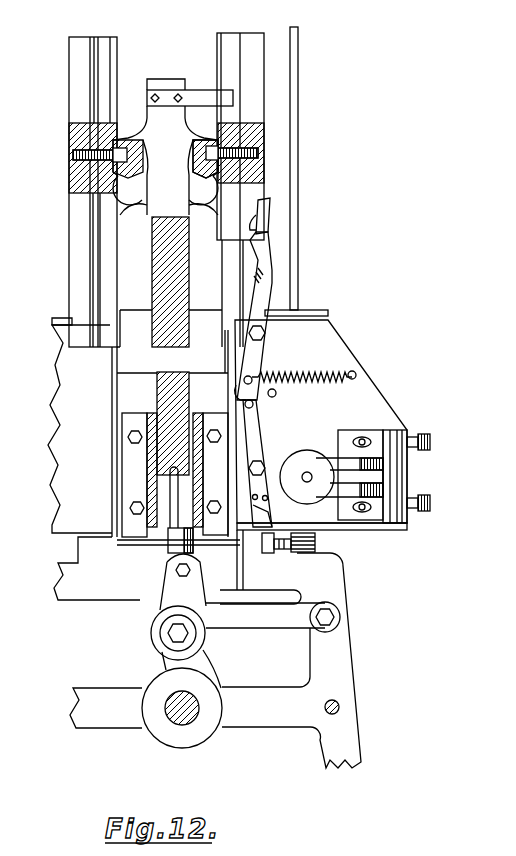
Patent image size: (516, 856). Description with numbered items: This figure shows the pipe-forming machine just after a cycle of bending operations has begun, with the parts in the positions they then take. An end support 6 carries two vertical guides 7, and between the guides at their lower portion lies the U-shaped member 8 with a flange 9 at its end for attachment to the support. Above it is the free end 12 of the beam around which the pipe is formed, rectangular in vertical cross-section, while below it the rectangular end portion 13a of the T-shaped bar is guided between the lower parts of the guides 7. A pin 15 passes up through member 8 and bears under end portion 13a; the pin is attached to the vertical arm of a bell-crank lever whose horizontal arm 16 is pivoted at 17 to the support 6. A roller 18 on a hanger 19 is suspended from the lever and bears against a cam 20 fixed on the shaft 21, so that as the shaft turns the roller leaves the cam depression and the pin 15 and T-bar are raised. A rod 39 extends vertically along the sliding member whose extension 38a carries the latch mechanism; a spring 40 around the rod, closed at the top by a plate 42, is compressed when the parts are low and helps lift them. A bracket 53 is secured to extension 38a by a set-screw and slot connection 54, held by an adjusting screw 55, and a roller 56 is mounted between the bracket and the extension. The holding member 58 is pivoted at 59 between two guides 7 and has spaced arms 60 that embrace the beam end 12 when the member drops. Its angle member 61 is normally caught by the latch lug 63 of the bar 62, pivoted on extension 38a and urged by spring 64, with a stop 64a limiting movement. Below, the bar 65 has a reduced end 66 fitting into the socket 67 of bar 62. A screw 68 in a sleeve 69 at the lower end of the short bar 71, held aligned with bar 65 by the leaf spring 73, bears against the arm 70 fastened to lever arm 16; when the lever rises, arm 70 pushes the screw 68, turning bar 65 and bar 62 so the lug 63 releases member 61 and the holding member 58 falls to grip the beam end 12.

The end support 6 is at (341, 658).
The guide 7 is at (104, 49).
The U-shaped member 8 is at (152, 481).
The flange 9 is at (132, 458).
The end of the beam 12 is at (176, 266).
The end portion of the T-bar 13a is at (184, 404).
The pin 15 is at (177, 504).
The horizontal arm of bell-crank lever 16 is at (224, 612).
The pivot 17 is at (334, 617).
The roller 18 is at (153, 634).
The hanger 19 is at (170, 603).
The cam 20 is at (198, 744).
The shaft 21 is at (177, 714).
The extension 38a is at (63, 370).
The rod 39 is at (298, 80).
The spring 40 is at (314, 548).
The plate 42 is at (62, 325).
The bracket 53 is at (348, 490).
The set screw and slot connection 54 is at (362, 440).
The adjusting screw 55 is at (418, 500).
The roller 56 is at (308, 455).
The holding member 58 is at (113, 215).
The pivot 59 is at (91, 162).
The arm 60 is at (128, 266).
The angle member 61 is at (198, 92).
The bar 62 is at (270, 284).
The latch lug 63 is at (269, 222).
The spring 64 is at (290, 373).
The stop 64a is at (276, 393).
The bar 65 is at (258, 441).
The reduced end 66 is at (253, 405).
The socket 67 is at (240, 396).
The screw 68 is at (292, 550).
The sleeve 69 is at (276, 548).
The arm 70 is at (240, 562).
The short bar 71 is at (266, 554).
The leaf spring 73 is at (268, 512).